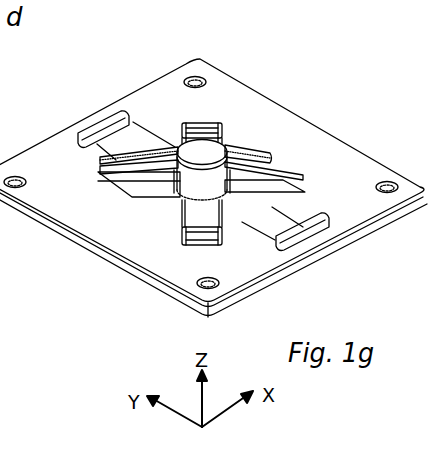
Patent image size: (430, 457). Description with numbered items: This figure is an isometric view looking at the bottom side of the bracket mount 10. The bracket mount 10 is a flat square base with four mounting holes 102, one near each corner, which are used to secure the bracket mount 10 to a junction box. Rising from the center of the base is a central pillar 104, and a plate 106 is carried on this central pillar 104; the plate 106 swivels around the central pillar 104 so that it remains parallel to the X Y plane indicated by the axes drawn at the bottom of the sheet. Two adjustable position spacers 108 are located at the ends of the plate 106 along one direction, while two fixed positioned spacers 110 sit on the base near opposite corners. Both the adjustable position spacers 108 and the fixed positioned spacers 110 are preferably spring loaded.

The bracket mount 10 is at (113, 305).
The mounting holes 102 is at (198, 78).
The central pillar 104 is at (225, 146).
The plate 106 is at (100, 172).
The adjustable position spacers 108 is at (193, 125).
The fixed positioned spacers 110 is at (100, 127).